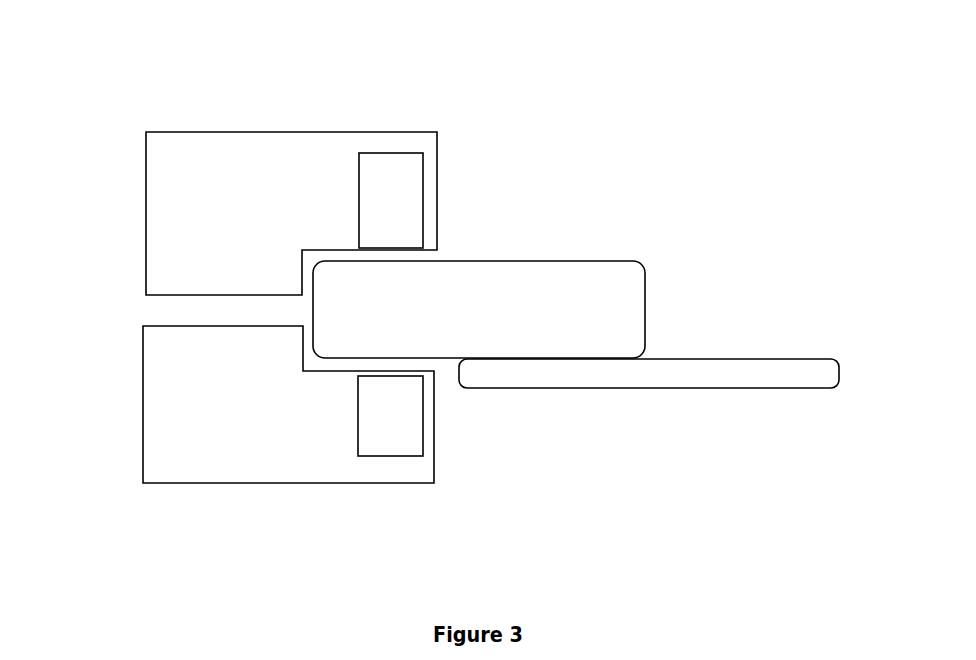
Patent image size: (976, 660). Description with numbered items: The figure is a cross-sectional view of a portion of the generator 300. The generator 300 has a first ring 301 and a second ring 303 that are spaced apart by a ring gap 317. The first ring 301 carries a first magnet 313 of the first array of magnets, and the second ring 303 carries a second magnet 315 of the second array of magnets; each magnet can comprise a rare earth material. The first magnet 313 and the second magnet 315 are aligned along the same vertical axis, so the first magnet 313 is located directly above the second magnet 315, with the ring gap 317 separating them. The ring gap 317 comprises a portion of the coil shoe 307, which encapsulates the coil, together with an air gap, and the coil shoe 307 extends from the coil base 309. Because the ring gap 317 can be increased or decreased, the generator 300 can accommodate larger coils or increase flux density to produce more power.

The generator 300 is at (728, 164).
The first ring 301 is at (203, 132).
The second ring 303 is at (217, 483).
The coil shoe 307 is at (502, 260).
The coil base 309 is at (778, 392).
The first magnet 313 is at (392, 155).
The second magnet 315 is at (391, 456).
The ring gap 317 is at (148, 311).